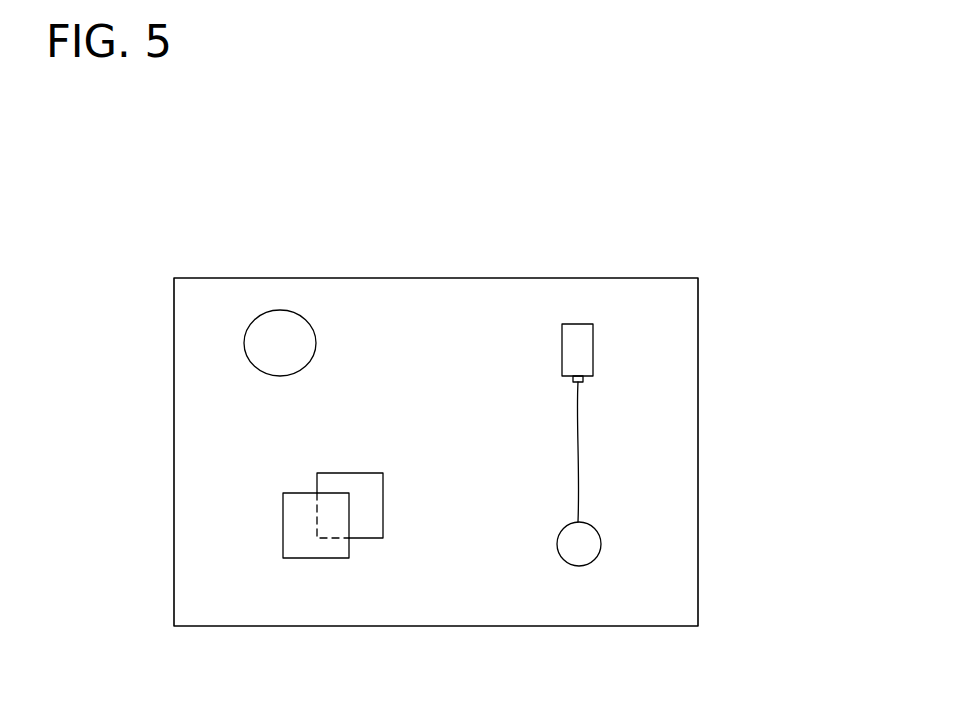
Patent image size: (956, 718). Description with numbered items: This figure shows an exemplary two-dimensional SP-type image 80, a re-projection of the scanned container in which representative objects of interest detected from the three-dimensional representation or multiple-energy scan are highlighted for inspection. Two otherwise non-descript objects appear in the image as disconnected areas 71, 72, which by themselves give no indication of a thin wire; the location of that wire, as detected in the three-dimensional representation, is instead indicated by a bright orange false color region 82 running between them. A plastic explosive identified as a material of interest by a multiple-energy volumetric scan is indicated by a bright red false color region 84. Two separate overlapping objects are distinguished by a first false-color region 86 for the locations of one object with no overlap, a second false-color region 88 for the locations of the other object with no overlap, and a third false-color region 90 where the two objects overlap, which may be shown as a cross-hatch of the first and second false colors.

The disconnected area 71 is at (595, 558).
The disconnected area 72 is at (578, 324).
The two-dimensional SP-type image 80 is at (766, 301).
The false color region 82 is at (580, 435).
The false color region 84 is at (277, 320).
The first false-color region 86 is at (283, 520).
The second false-color region 88 is at (355, 473).
The third false-color region 90 is at (328, 510).